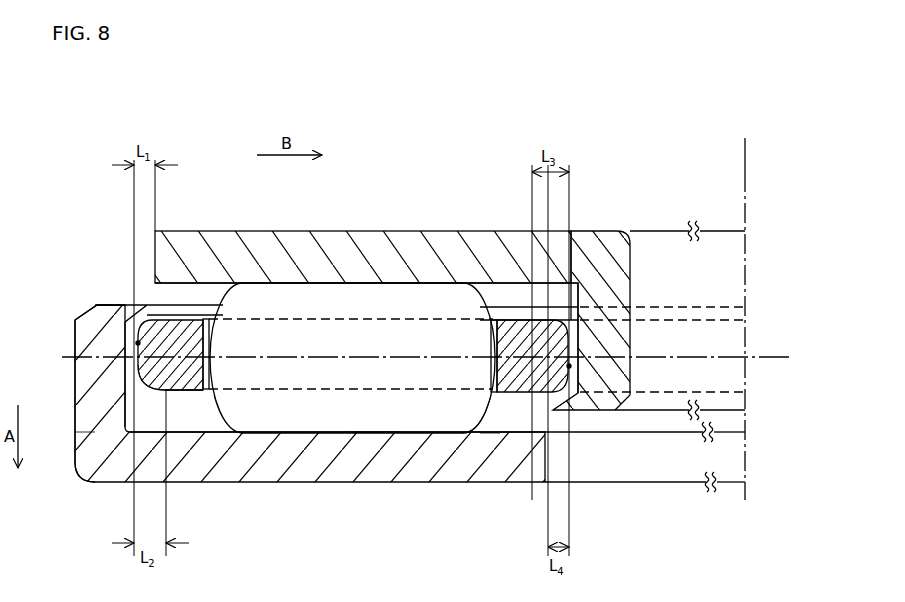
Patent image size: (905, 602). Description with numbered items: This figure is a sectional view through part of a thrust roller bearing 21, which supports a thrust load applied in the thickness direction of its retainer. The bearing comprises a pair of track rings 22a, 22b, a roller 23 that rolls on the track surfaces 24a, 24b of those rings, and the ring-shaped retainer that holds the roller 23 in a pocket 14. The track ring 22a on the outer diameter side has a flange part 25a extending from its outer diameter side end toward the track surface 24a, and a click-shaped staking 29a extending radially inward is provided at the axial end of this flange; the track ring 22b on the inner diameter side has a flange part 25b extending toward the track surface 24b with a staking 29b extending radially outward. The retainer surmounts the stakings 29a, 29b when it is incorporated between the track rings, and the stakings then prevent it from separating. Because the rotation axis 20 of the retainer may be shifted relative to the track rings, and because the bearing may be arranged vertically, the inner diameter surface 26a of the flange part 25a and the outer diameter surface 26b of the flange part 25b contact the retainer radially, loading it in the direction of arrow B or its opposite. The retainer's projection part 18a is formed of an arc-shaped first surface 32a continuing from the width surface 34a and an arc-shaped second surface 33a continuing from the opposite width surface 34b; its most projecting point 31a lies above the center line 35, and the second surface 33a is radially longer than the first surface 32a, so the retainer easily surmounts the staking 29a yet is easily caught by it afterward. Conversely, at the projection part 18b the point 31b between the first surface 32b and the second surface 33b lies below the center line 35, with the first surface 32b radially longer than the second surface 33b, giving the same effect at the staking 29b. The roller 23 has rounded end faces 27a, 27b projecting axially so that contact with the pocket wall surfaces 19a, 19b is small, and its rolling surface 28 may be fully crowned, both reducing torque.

The pocket 14 is at (490, 406).
The projection part 18a is at (130, 367).
The projection part 18b is at (584, 359).
The wall surface 19a is at (222, 320).
The wall surface 19b is at (488, 325).
The rotation axis 20 is at (745, 172).
The thrust roller bearing 21 is at (634, 186).
The track ring 22a is at (333, 462).
The track ring 22b is at (360, 252).
The roller 23 is at (417, 415).
The track surface 24a is at (298, 436).
The track surface 24b is at (318, 288).
The flange part 25a is at (102, 372).
The flange part 25b is at (607, 343).
The inner diameter surface 26a is at (76, 432).
The outer diameter surface 26b is at (580, 290).
The end face 27a is at (220, 425).
The end face 27b is at (465, 425).
The rolling surface 28 is at (372, 434).
The staking 29a is at (130, 318).
The staking 29b is at (560, 409).
The point 31a is at (136, 343).
The point 31b is at (571, 366).
The first surface 32a is at (124, 309).
The first surface 32b is at (566, 306).
The second surface 33a is at (140, 387).
The second surface 33b is at (566, 394).
The width surface 34a is at (185, 318).
The width surface 34b is at (193, 392).
The center line 35 is at (774, 357).